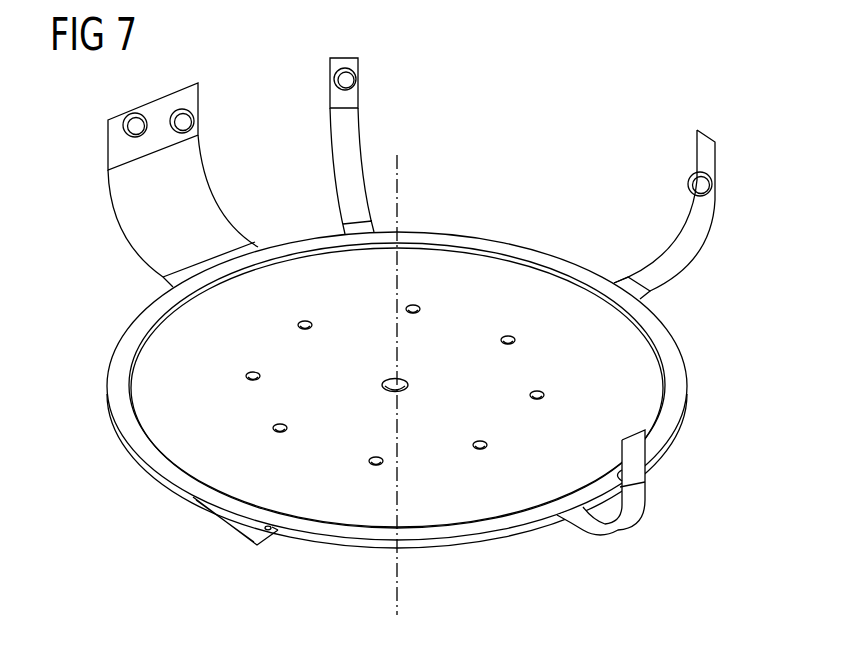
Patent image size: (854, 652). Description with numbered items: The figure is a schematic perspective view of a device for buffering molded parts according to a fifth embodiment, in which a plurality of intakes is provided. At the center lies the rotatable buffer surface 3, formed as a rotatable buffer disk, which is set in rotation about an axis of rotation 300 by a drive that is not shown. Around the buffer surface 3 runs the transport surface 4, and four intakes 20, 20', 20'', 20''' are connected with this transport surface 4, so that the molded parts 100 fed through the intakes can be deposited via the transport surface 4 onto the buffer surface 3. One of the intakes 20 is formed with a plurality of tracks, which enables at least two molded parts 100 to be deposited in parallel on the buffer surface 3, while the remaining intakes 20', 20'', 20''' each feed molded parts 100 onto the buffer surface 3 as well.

The buffer surface 3 is at (461, 318).
The transport surface 4 is at (126, 368).
The intake 20 is at (153, 185).
The intake 20' is at (318, 146).
The intake 20'' is at (664, 214).
The intake 20''' is at (641, 482).
The molded parts 100 is at (197, 123).
The axis of rotation 300 is at (398, 166).